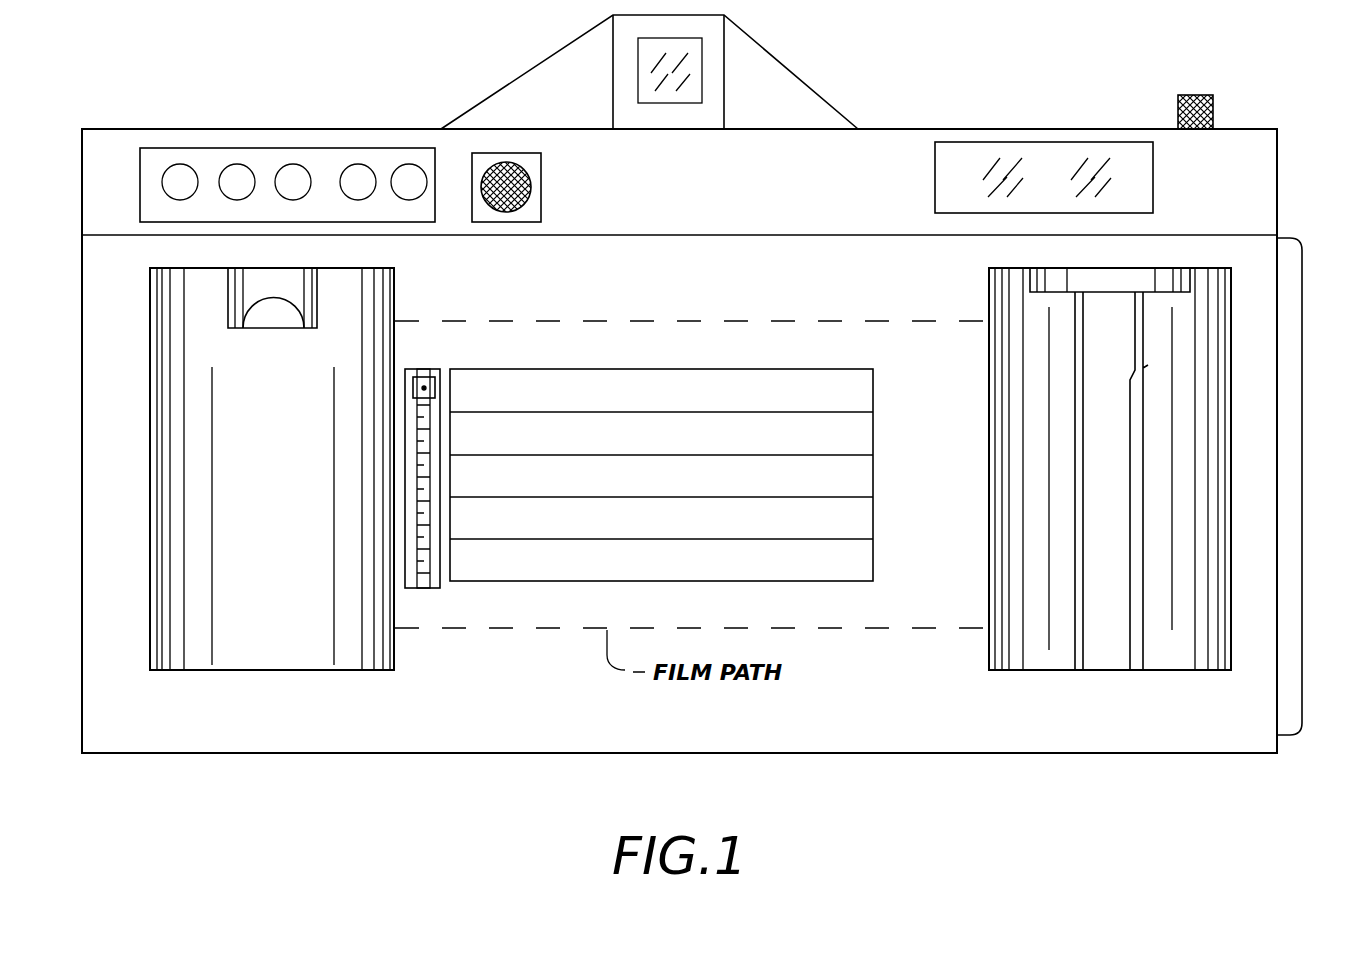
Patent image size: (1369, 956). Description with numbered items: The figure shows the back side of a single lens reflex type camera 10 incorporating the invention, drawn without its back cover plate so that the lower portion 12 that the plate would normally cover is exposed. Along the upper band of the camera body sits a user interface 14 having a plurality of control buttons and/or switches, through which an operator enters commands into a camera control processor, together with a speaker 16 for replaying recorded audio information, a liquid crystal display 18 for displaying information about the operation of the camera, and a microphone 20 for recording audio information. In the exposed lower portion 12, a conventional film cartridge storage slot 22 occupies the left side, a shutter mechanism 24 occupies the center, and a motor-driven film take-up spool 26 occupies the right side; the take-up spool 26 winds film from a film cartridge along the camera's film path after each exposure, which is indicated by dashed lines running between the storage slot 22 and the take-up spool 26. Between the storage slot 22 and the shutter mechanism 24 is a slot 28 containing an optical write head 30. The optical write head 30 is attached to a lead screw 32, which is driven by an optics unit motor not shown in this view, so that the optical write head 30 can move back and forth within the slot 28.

The camera 10 is at (800, 65).
The lower portion 12 is at (1302, 478).
The user interface 14 is at (140, 207).
The speaker 16 is at (541, 183).
The liquid crystal display (LCD) 18 is at (935, 183).
The microphone 20 is at (1213, 110).
The film cartridge storage slot 22 is at (152, 516).
The shutter mechanism 24 is at (621, 368).
The film take-up spool 26 is at (1143, 649).
The slot 28 is at (436, 524).
The optical write head 30 is at (412, 368).
The lead screw 32 is at (430, 572).